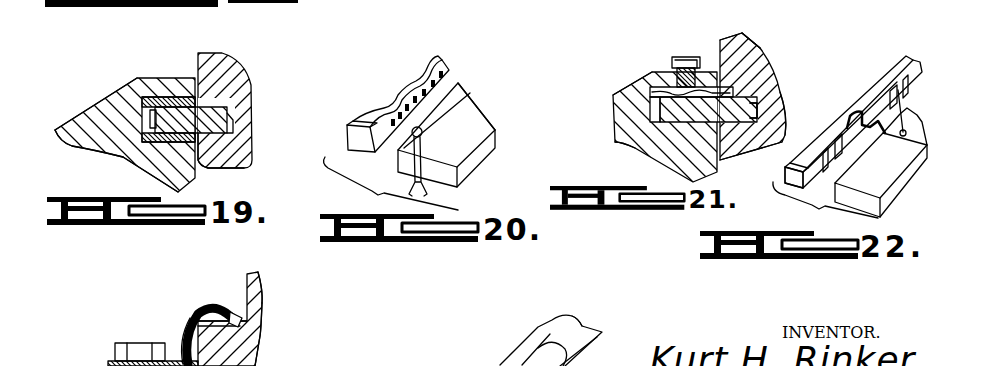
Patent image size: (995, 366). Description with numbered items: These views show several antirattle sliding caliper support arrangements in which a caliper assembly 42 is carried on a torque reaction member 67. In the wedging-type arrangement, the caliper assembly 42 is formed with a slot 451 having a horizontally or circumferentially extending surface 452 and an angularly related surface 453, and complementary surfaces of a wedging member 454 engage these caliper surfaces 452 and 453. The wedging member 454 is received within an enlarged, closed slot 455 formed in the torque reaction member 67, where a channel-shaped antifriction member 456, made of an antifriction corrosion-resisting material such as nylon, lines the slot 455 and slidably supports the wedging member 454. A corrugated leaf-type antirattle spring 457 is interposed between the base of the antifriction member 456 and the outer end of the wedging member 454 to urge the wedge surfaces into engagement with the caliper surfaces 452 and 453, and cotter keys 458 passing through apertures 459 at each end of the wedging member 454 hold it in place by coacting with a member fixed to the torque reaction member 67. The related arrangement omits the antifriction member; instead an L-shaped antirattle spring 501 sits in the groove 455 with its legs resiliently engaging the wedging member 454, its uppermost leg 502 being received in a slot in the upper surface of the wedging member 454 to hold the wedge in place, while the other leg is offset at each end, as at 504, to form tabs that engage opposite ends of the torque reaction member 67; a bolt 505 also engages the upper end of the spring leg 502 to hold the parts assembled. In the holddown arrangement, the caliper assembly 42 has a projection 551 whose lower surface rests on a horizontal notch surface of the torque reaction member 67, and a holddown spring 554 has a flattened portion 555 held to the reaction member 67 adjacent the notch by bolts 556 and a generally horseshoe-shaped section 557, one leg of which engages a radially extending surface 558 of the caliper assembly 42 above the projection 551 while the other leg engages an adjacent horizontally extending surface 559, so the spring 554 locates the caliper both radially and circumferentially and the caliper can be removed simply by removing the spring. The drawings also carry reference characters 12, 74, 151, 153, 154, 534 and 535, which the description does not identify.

In FIG. 21, the blade 12 is at (760, 52).
In FIG. 19, the caliper assembly 42 is at (228, 73).
In FIG. 21, the caliper assembly 42 is at (724, 150).
In FIG. 23, the caliper assembly 42 is at (264, 315).
In FIG. 19, the torque reaction member 67 is at (98, 104).
In FIG. 21, the torque reaction member 67 is at (617, 125).
In FIG. 19, the inclined face of support body 74 is at (123, 98).
In FIG. 21, the inclined face of support body 74 is at (623, 103).
In FIG. 23, the inclined face of support body 74 is at (130, 360).
In FIG. 21, the blade edge 151 is at (763, 112).
In FIG. 21, the blade shoulder 153 is at (760, 100).
In FIG. 21, the blade back 154 is at (727, 14).
In FIG. 19, the slot 451 is at (237, 128).
In FIG. 19, the horizontally extending surface 452 is at (227, 165).
In FIG. 21, the horizontally extending surface 452 is at (751, 151).
In FIG. 19, the angularly related surface 453 is at (235, 102).
In FIG. 19, the wedging member 454 is at (178, 105).
In FIG. 20, the wedging member 454 is at (458, 164).
In FIG. 22, the wedging member 454 is at (877, 191).
In FIG. 19, the closed slot 455 is at (98, 153).
In FIG. 21, the closed slot 455 is at (641, 151).
In FIG. 19, the antifriction member 456 is at (147, 103).
In FIG. 19, the corrugated leaf-type antirattle spring 457 is at (122, 163).
In FIG. 20, the corrugated leaf-type antirattle spring 457 is at (420, 84).
In FIG. 20, the cotter keys 458 is at (425, 135).
In FIG. 20, the apertures 459 is at (425, 152).
In FIG. 21, the L-shaped antirattle spring 501 is at (650, 97).
In FIG. 22, the L-shaped antirattle spring 501 is at (917, 57).
In FIG. 21, the uppermost leg 502 is at (667, 87).
In FIG. 22, the uppermost leg 502 is at (898, 88).
In FIG. 22, the offset tabs 504 is at (793, 182).
In FIG. 21, the bolt 505 is at (688, 57).
In FIG. 23, the hook 534 is at (183, 311).
In FIG. 23, the curved spring strip 535 is at (186, 360).
In FIG. 23, the projection 551 is at (256, 343).
In FIG. 24, the holddown spring 554 is at (583, 315).
In FIG. 24, the flattened portion 555 is at (535, 320).
In FIG. 23, the bolts 556 is at (112, 349).
In FIG. 23, the horseshoe-shaped section 557 is at (198, 310).
In FIG. 24, the horseshoe-shaped section 557 is at (600, 322).
In FIG. 23, the radially extending surface 558 is at (260, 336).
In FIG. 23, the horizontally extending surface 559 is at (262, 304).